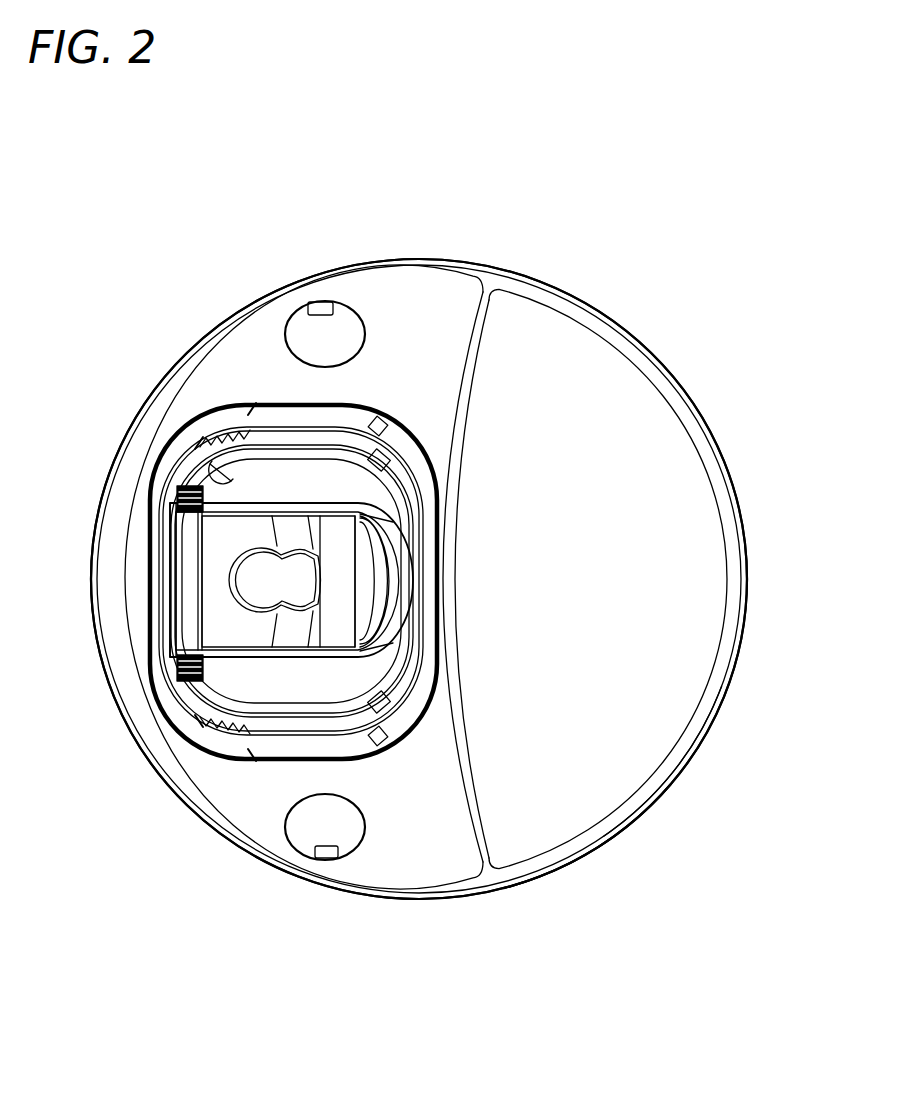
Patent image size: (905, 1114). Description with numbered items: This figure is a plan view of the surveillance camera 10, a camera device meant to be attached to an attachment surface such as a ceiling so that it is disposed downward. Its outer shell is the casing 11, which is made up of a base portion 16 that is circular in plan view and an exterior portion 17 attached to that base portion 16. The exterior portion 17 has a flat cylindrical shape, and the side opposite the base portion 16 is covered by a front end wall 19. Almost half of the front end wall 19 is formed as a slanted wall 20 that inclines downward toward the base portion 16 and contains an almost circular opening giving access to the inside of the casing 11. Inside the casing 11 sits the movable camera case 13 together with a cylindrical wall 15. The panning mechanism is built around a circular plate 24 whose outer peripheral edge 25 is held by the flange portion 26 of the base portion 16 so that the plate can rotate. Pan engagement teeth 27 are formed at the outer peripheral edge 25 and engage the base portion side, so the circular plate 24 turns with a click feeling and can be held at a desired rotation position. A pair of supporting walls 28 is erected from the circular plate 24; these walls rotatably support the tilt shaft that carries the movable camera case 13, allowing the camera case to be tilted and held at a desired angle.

The surveillance camera 10 is at (604, 239).
The casing 11 is at (637, 331).
The movable camera case 13 is at (257, 657).
The cylindrical wall 15 is at (163, 628).
The base portion 16 is at (593, 853).
The exterior portion 17 is at (670, 752).
The front end wall 19 is at (680, 540).
The slanted wall 20 is at (418, 310).
The circular plate 24 is at (264, 421).
The outer peripheral edge 25 is at (215, 478).
The flange portion 26 is at (160, 498).
The pan engagement teeth 27 is at (220, 432).
The supporting walls 28 is at (305, 476).